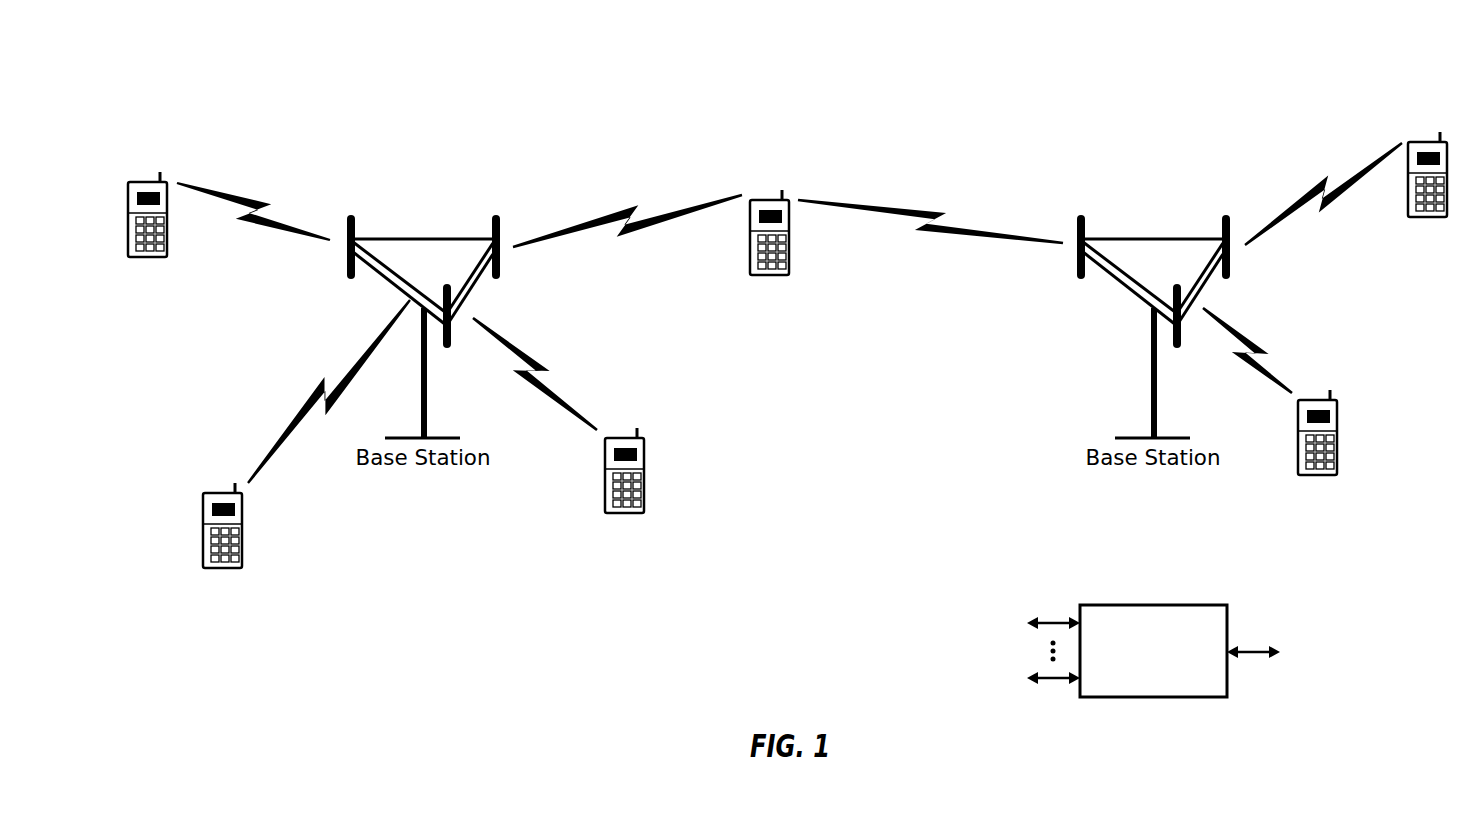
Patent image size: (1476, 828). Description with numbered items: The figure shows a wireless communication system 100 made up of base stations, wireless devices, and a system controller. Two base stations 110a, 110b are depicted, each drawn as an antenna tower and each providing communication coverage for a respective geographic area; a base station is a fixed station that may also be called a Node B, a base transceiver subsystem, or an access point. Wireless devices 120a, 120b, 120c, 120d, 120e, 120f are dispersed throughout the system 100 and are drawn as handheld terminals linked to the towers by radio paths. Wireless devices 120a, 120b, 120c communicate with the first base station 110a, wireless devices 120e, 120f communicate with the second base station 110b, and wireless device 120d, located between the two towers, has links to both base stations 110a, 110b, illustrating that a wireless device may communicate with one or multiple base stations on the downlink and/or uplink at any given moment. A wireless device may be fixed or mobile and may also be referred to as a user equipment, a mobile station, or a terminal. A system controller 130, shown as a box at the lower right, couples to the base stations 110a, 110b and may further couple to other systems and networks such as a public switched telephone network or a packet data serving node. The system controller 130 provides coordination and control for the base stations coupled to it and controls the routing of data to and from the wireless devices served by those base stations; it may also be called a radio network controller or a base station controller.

The wireless communication system 100 is at (1200, 65).
The base station 110a is at (418, 239).
The base station 110b is at (1148, 239).
The wireless device 120a is at (158, 181).
The wireless device 120b is at (233, 492).
The wireless device 120c is at (620, 436).
The wireless device 120d is at (765, 198).
The wireless device 120e is at (1313, 400).
The wireless device 120f is at (1423, 140).
The system controller 130 is at (1146, 604).